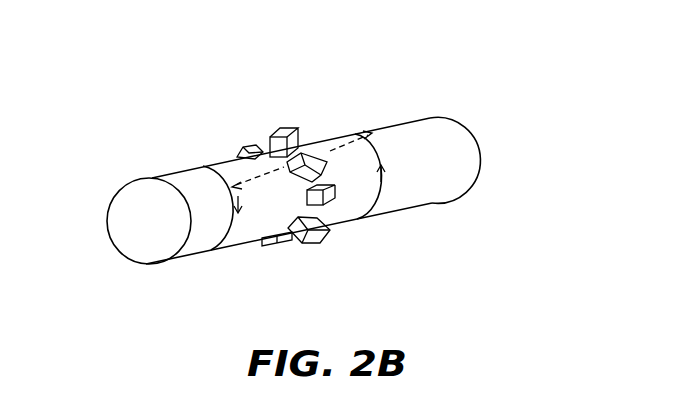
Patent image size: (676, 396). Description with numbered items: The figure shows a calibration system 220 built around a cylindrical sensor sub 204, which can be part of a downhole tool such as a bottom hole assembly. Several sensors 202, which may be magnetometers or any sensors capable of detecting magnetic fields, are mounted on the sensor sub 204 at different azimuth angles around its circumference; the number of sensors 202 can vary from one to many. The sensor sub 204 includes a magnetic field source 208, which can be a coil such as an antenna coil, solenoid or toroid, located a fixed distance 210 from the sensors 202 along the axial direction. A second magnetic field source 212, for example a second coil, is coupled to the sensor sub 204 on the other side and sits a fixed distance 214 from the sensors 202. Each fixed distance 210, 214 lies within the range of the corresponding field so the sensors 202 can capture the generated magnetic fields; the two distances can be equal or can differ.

The calibration system 220 is at (130, 80).
The sensor sub 204 is at (474, 147).
The fixed distance 214 is at (253, 178).
The second magnetic field source 212 is at (238, 221).
The magnetic field source 208 is at (373, 144).
The fixed distance 210 is at (352, 141).
The sensors 202 is at (243, 148).